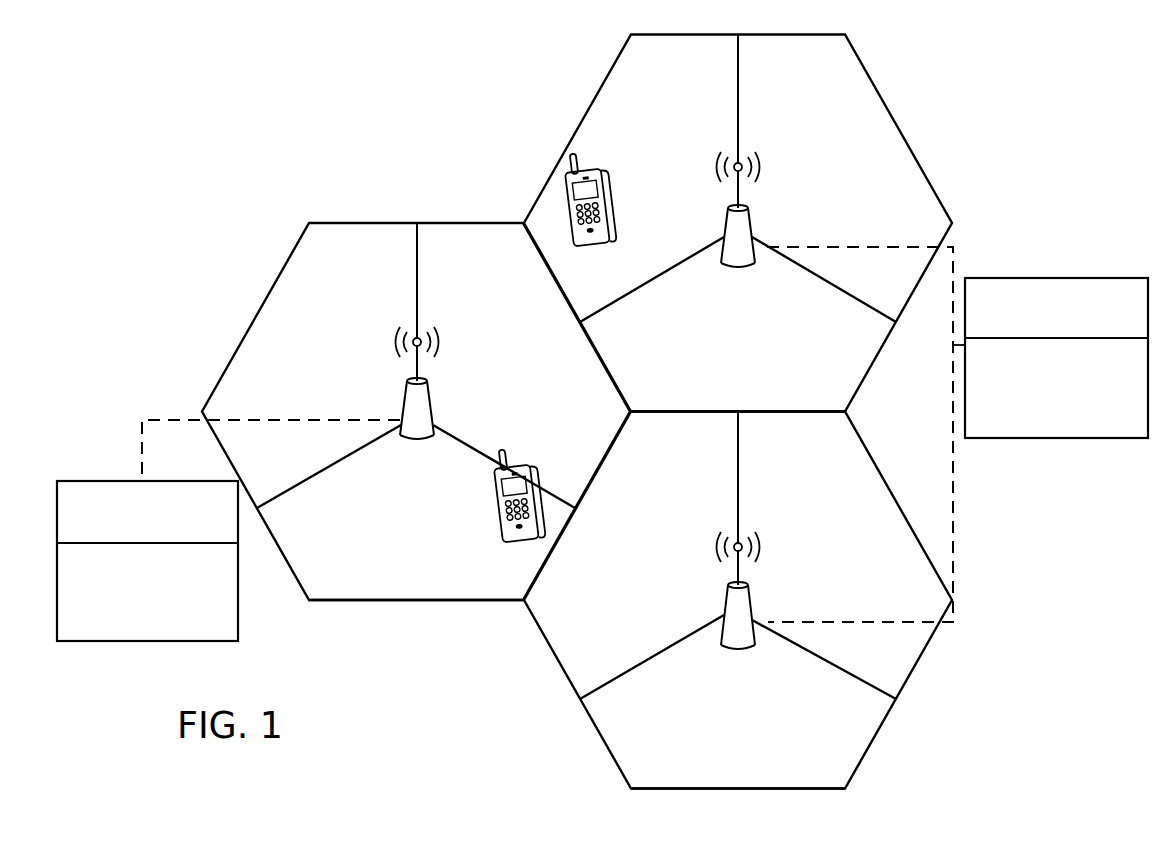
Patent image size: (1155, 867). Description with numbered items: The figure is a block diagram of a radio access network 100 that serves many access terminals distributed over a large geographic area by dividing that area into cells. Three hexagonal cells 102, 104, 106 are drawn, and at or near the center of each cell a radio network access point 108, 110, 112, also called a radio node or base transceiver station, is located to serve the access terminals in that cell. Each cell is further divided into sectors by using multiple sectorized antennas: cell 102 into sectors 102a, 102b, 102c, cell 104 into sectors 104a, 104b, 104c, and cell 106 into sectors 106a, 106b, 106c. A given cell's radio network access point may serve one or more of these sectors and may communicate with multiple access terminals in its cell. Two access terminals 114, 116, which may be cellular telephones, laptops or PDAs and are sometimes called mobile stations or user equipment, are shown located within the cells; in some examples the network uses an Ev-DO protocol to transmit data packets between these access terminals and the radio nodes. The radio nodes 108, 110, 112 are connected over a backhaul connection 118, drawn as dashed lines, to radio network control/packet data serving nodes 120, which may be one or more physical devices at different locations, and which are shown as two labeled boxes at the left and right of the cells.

The radio access network 100 is at (353, 112).
The cell 102 is at (257, 296).
The sector 102a is at (343, 372).
The sector 102b is at (524, 371).
The sector 102c is at (444, 574).
The cell 104 is at (887, 96).
The sector 104a is at (688, 171).
The sector 104b is at (864, 188).
The sector 104c is at (781, 352).
The cell 106 is at (553, 697).
The sector 106a is at (683, 536).
The sector 106b is at (858, 564).
The sector 106c is at (768, 752).
The radio network access point 108 is at (405, 436).
The radio network access point 110 is at (722, 263).
The radio network access point 112 is at (730, 645).
The access terminal 114 is at (613, 247).
The access terminal 116 is at (495, 528).
The backhaul connection 118 is at (142, 438).
The radio network control/packet data serving node 120 is at (602, 459).